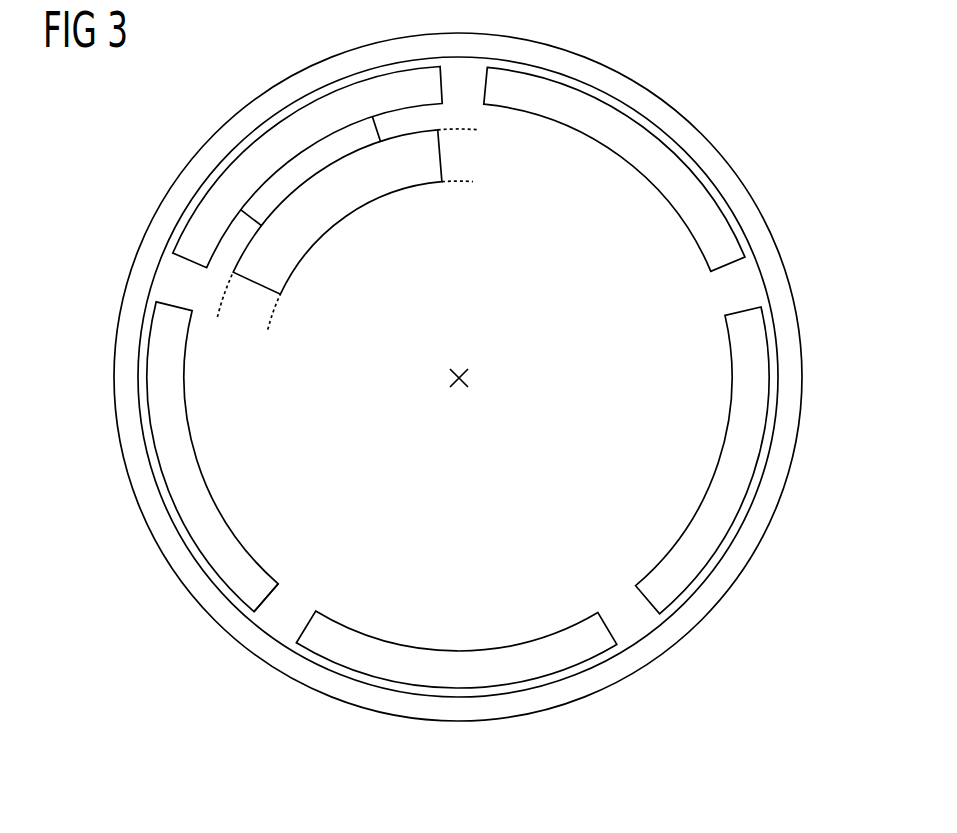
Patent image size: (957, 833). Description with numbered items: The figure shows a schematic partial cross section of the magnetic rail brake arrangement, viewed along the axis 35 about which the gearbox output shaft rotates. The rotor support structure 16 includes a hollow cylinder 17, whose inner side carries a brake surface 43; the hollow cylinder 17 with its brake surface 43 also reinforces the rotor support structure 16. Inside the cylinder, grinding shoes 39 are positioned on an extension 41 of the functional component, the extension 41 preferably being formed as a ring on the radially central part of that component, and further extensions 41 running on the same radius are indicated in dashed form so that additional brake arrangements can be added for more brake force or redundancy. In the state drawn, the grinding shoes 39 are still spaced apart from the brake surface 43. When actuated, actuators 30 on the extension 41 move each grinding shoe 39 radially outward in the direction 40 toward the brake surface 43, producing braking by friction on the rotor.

The rotor support structure 16 is at (710, 101).
The hollow cylinder 17 is at (792, 341).
The actuator 30 is at (298, 172).
The axis 35 is at (450, 381).
The grinding shoe 39 is at (245, 588).
The direction 40 is at (580, 212).
The extension 41 is at (278, 243).
The brake surface 43 is at (658, 638).